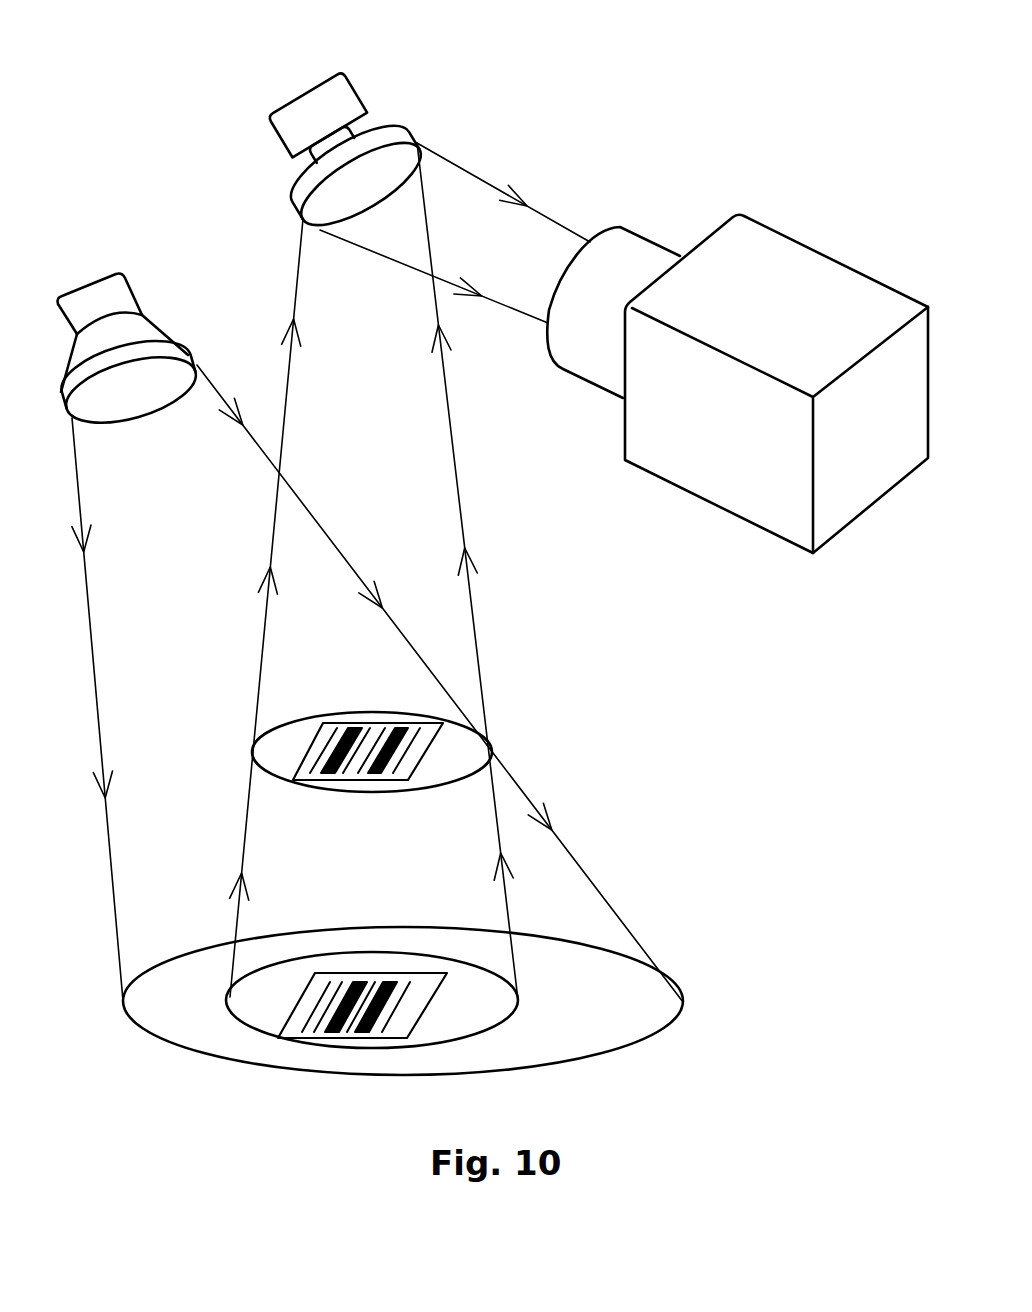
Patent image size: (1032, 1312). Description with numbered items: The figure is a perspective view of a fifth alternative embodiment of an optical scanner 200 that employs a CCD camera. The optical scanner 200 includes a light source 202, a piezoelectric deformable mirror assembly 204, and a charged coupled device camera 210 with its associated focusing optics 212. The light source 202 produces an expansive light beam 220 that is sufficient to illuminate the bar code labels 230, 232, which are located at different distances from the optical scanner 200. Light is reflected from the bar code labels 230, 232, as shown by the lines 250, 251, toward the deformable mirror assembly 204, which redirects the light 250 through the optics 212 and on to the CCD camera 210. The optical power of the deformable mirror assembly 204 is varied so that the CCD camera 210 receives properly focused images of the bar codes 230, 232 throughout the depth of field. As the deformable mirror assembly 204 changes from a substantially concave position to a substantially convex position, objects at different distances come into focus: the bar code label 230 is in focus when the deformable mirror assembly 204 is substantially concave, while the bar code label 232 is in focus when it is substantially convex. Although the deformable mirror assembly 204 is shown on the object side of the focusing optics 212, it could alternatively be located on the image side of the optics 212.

The optical scanner 200 is at (122, 170).
The light source 202 is at (157, 320).
The piezoelectric deformable mirror assembly 204 is at (412, 122).
The charged coupled device (CCD) camera 210 is at (877, 270).
The focusing optics 212 is at (655, 233).
The expansive light beam 220 is at (628, 1047).
The bar code label 230 is at (427, 755).
The bar code label 232 is at (428, 1006).
The reflected light line 250 is at (267, 633).
The reflected light line 251 is at (473, 601).